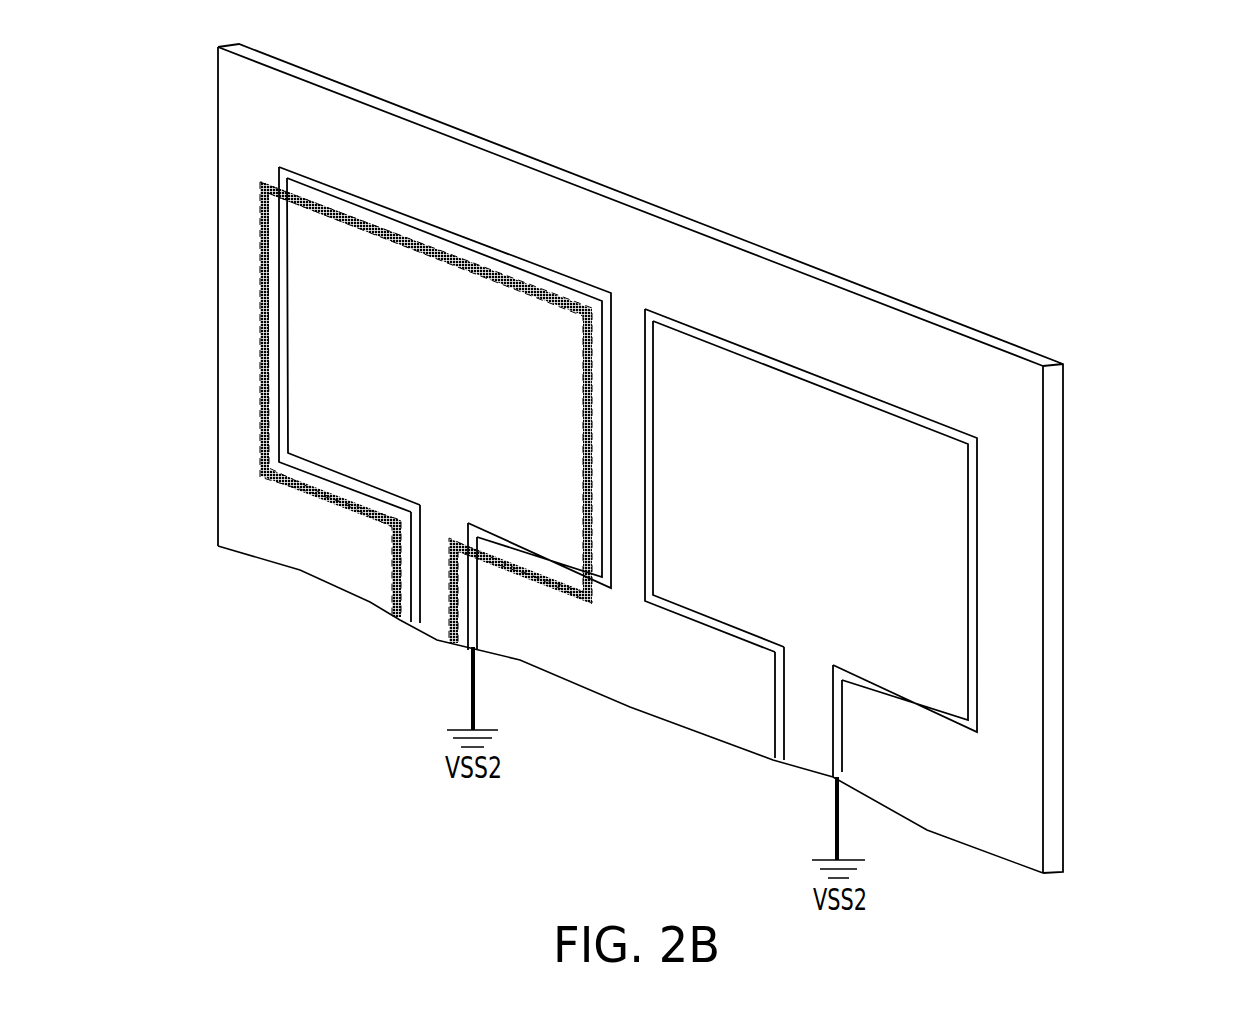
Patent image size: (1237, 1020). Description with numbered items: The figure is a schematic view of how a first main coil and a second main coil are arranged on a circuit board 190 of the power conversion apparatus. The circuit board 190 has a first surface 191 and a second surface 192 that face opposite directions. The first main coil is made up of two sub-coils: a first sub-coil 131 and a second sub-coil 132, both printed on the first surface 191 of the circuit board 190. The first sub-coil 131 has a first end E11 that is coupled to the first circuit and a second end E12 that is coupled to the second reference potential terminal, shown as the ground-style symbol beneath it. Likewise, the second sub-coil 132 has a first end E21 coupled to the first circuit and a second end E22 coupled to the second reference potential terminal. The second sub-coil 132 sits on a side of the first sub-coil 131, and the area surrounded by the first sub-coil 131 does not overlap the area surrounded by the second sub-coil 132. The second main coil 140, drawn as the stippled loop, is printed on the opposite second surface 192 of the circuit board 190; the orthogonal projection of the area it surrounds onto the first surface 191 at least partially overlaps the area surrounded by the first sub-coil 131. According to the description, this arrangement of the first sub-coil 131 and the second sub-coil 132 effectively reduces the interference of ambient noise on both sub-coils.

The circuit board 190 is at (669, 458).
The first surface 191 is at (250, 113).
The second surface 192 is at (1066, 469).
The first sub-coil 131 is at (369, 436).
The second sub-coil 132 is at (892, 576).
The second main coil 140 is at (262, 218).
The first end of the first sub-coil E11 is at (415, 622).
The second end of the first sub-coil E12 is at (470, 636).
The first end of the second sub-coil E21 is at (780, 763).
The second end of the second sub-coil E22 is at (832, 764).